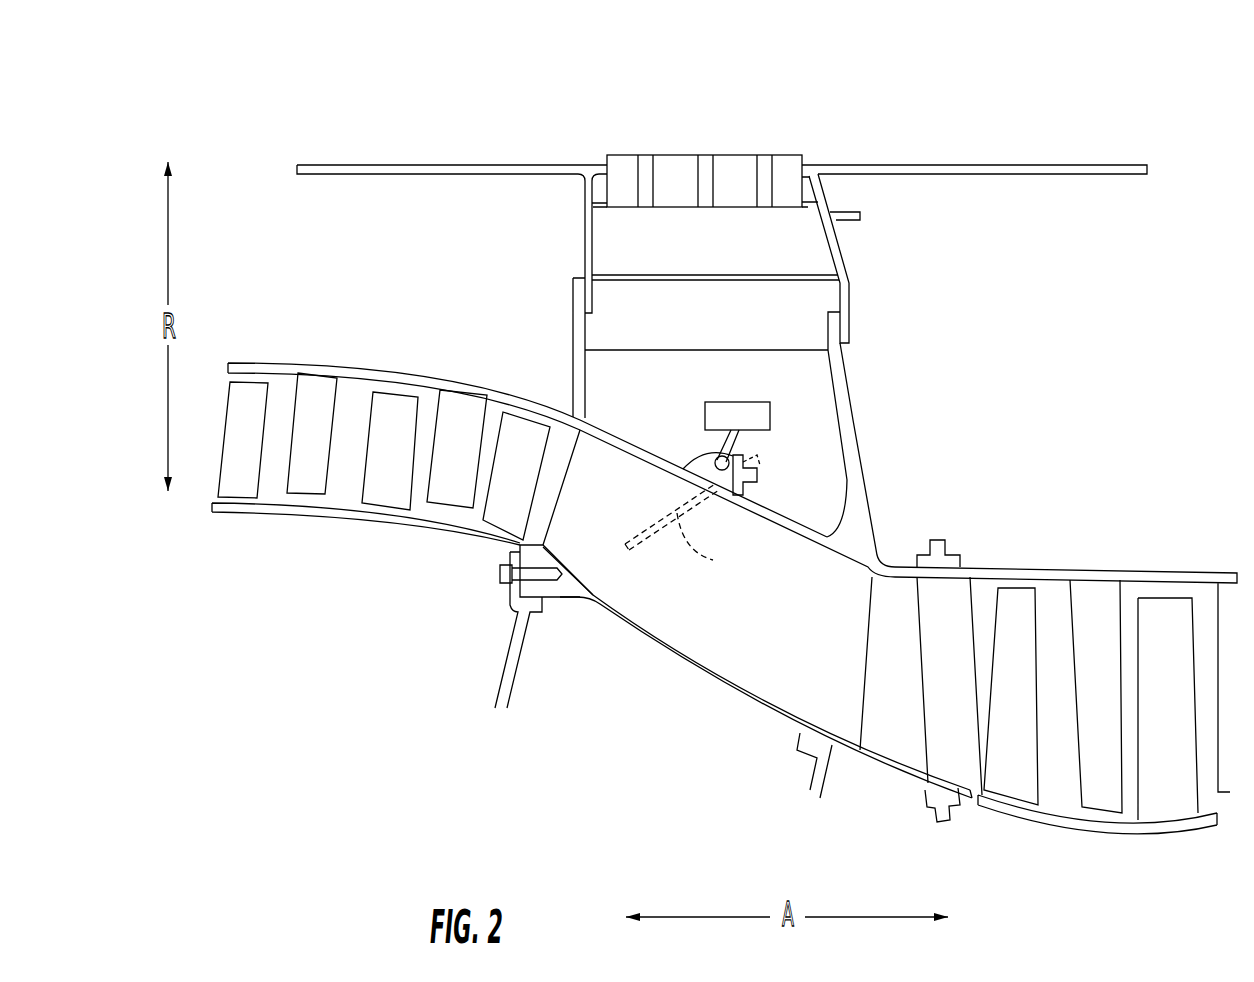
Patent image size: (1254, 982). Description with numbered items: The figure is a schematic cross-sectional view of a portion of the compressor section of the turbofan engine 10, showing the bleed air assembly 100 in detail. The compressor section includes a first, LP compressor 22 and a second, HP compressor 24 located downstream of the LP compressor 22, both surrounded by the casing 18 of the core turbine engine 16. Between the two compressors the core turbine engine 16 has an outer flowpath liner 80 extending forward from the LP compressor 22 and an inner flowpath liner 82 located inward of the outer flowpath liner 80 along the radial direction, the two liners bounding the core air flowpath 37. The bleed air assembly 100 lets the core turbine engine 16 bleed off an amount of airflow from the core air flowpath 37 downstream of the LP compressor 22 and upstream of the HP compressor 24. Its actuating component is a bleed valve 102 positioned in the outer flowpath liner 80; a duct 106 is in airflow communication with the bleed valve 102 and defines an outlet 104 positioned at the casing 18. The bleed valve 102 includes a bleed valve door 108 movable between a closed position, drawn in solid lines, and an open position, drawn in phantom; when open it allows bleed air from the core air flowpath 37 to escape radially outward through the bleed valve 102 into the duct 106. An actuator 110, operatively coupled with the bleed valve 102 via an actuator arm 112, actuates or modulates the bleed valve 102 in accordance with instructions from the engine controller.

The turbofan engine 10 is at (1000, 87).
The core turbine engine 16 is at (932, 107).
The casing 18 is at (431, 165).
The LP compressor 22 is at (315, 343).
The HP compressor 24 is at (1133, 520).
The core air flowpath 37 is at (842, 595).
The outer flowpath liner 80 is at (790, 522).
The inner flowpath liner 82 is at (737, 697).
The bleed air assembly 100 is at (907, 327).
The bleed valve 102 is at (690, 440).
The outlet 104 is at (748, 138).
The duct 106 is at (787, 298).
The bleed valve door 108 is at (630, 400).
The actuator 110 is at (741, 400).
The actuator arm 112 is at (733, 443).